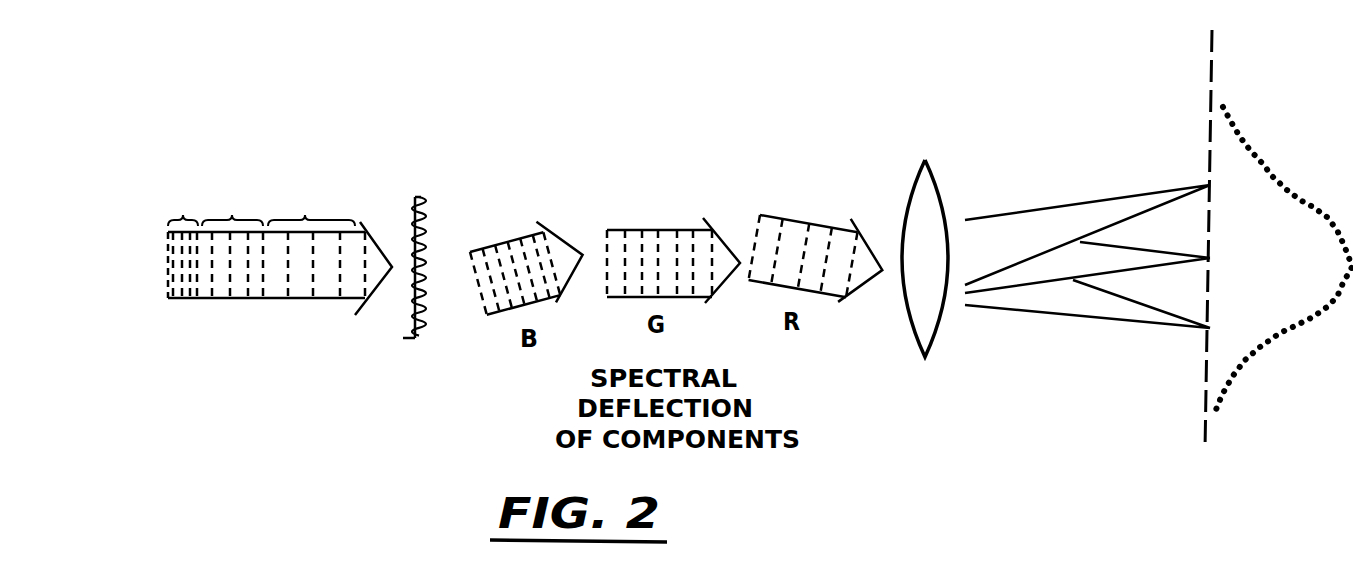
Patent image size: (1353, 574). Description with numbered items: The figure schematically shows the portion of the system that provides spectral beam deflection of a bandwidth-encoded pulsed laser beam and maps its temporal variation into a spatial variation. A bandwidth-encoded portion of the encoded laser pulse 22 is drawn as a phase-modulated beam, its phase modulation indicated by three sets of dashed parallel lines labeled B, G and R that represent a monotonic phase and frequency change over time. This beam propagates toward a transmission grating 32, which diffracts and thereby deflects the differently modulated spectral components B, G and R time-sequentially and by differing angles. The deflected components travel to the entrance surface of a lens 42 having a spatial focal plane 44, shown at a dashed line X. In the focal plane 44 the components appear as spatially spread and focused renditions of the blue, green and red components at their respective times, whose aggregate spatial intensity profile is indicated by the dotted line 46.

The encoded laser pulse 22 is at (168, 248).
The transmission grating 32 is at (422, 197).
The lens 42 is at (931, 165).
The spatial focal plane 44 is at (1212, 42).
The aggregate spatial intensity profile 46 is at (1253, 153).